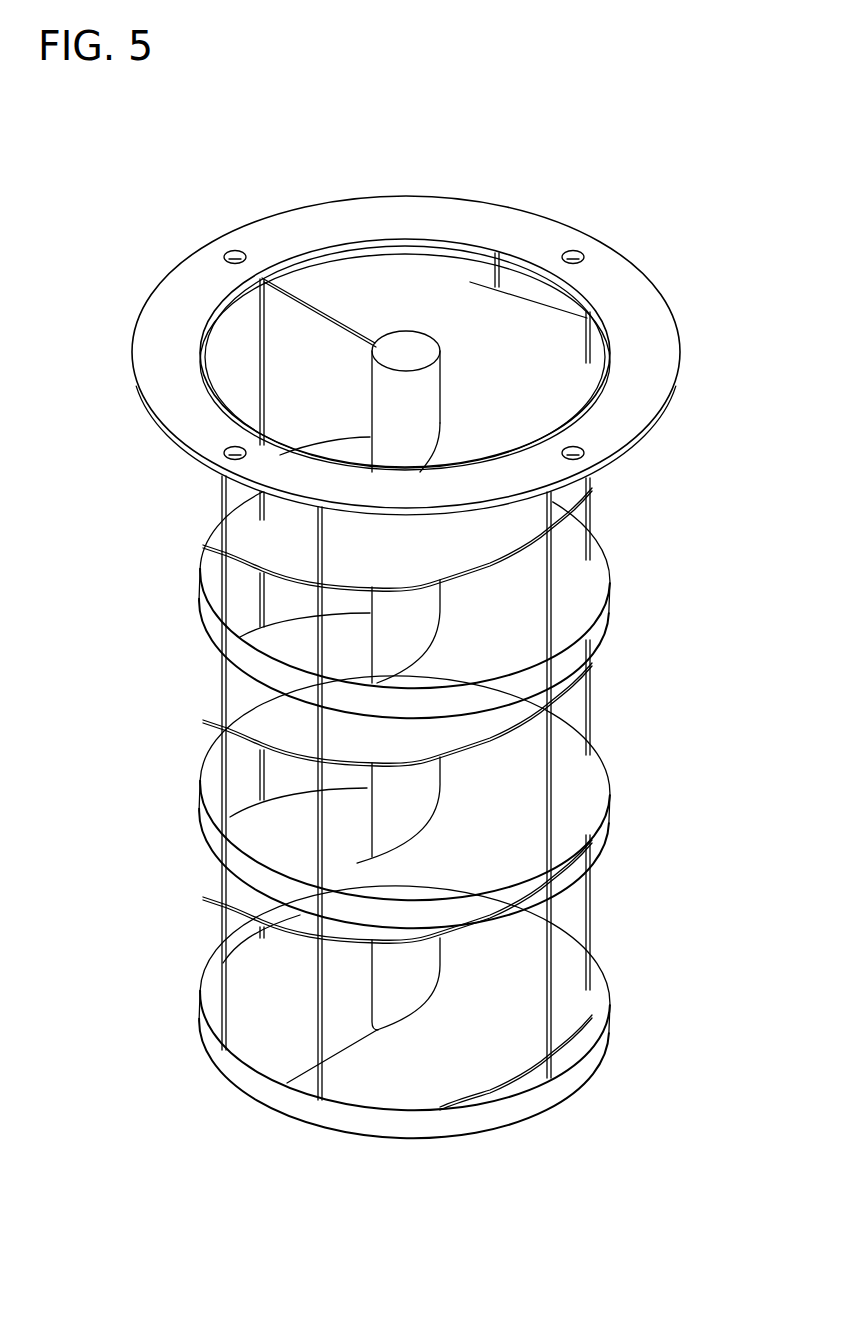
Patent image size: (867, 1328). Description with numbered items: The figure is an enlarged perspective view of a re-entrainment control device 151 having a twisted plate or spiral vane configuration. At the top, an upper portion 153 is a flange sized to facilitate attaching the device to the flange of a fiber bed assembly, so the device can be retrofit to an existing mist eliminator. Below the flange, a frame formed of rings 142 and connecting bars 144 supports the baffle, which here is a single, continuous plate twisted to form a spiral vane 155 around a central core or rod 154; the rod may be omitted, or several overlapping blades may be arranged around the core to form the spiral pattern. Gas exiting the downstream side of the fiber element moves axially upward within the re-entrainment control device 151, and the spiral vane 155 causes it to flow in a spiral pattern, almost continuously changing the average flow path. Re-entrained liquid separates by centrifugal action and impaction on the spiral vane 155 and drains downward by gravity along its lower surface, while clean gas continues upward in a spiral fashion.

The re-entrainment control device 151 is at (548, 198).
The upper portion 153 is at (366, 220).
The central core or rod 154 is at (383, 386).
The spiral vane 155 is at (524, 360).
The rings 142 is at (604, 622).
The connecting bars 144 is at (588, 512).